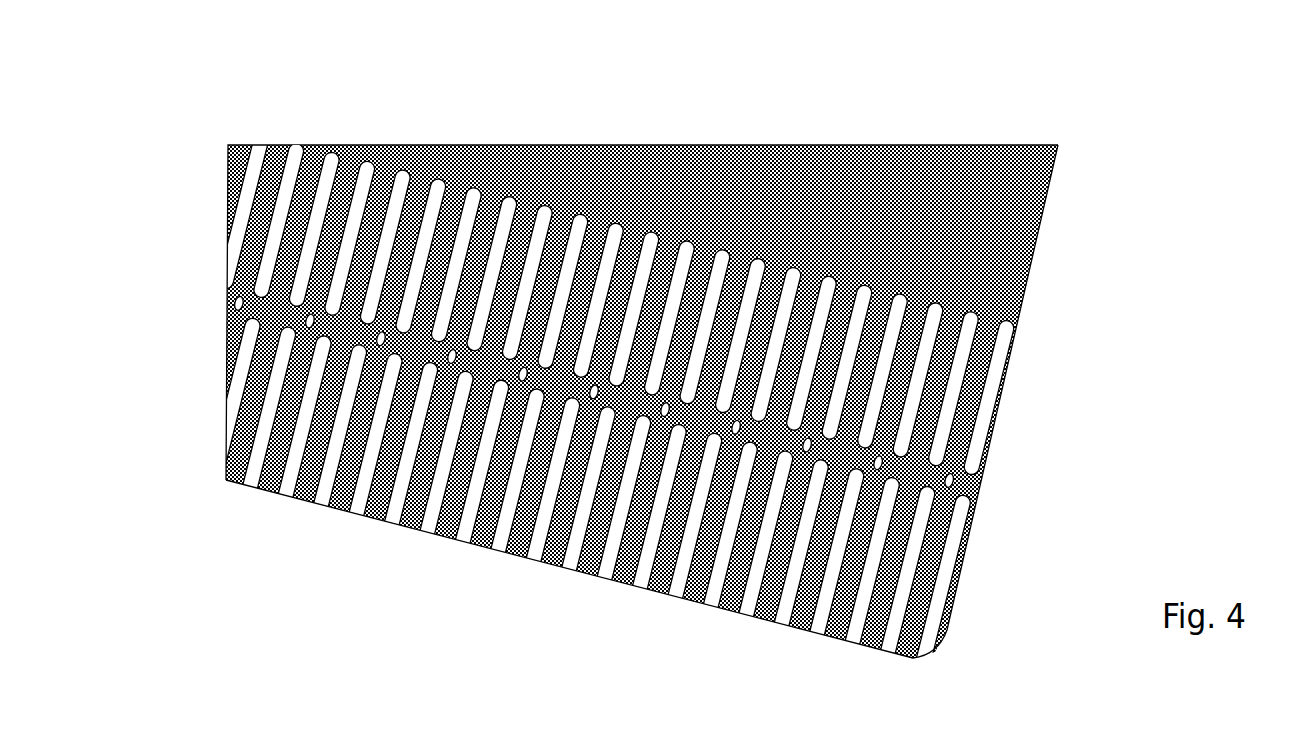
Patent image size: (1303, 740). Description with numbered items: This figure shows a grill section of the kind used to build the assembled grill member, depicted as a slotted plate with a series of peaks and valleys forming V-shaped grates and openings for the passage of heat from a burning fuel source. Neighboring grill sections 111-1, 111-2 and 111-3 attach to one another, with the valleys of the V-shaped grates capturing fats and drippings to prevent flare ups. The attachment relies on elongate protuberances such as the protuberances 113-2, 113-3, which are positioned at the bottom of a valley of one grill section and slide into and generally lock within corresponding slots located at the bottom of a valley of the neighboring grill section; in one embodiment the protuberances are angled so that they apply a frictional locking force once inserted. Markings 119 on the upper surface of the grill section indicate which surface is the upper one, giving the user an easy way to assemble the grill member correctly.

The grill section 111-1 is at (293, 207).
The grill section 111-2 is at (602, 190).
The grill section 111-3 is at (930, 220).
The elongate protuberance 113-2 is at (362, 450).
The elongate protuberance 113-3 is at (640, 508).
The markings 119 is at (947, 580).